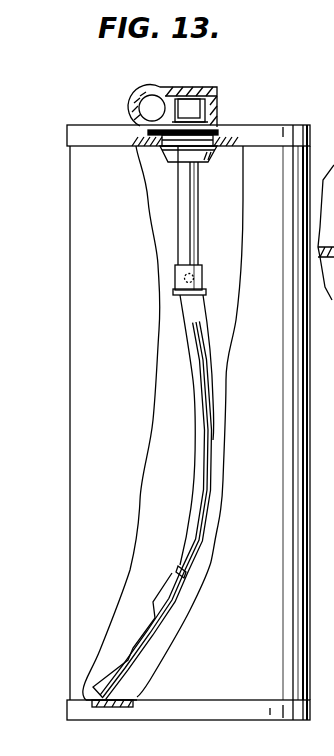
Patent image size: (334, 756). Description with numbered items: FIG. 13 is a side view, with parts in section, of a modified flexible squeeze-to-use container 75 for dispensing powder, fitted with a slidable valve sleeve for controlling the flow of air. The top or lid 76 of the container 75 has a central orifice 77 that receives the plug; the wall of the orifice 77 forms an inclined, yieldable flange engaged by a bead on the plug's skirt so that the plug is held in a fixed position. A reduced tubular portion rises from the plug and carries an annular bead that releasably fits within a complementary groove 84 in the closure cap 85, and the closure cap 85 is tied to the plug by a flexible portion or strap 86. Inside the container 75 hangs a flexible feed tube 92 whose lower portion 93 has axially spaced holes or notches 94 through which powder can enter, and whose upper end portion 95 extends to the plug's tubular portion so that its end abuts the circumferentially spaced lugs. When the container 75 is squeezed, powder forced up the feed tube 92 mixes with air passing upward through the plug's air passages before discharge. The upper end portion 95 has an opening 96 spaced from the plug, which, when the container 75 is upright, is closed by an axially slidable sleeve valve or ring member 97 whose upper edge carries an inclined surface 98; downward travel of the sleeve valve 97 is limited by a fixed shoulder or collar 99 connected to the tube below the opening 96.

The container 75 is at (77, 258).
The top or lid 76 is at (307, 119).
The central orifice 77 is at (143, 172).
The groove 84 is at (214, 120).
The closure cap 85 is at (194, 88).
The flexible portion or strap 86 is at (143, 99).
The flexible feed tube 92 is at (207, 483).
The lower portion 93 is at (185, 590).
The holes or notches 94 is at (184, 569).
The upper end portion 95 is at (194, 208).
The opening 96 is at (202, 279).
The sleeve valve or ring member 97 is at (177, 279).
The inclined surface 98 is at (201, 270).
The flange 99 is at (205, 292).